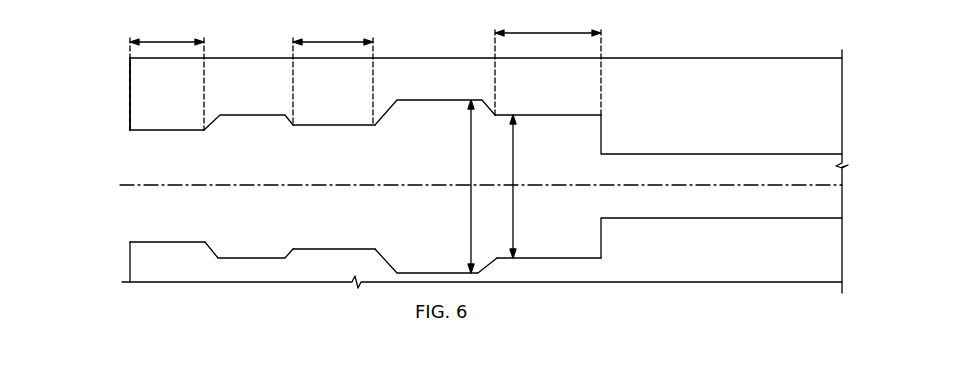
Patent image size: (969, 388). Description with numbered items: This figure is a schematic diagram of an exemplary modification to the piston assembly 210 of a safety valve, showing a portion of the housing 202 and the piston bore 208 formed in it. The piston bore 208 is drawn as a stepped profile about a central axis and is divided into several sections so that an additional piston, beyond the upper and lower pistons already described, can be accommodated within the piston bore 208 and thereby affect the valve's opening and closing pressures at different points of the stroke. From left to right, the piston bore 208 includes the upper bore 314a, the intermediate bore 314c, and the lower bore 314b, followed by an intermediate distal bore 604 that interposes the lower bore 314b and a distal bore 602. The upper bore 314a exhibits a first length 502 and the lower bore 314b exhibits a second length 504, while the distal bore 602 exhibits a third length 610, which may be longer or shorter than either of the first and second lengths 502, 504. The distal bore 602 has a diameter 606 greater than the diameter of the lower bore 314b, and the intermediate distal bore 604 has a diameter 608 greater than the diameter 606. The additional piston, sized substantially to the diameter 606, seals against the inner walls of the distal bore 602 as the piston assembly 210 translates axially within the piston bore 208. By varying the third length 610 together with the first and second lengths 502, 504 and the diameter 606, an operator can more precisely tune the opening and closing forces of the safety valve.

The housing 202 is at (718, 62).
The piston bore 208 is at (481, 172).
The piston assembly 210 is at (83, 43).
The upper bore 314a is at (172, 130).
The lower bore 314b is at (338, 125).
The intermediate bore 314c is at (257, 115).
The first length 502 is at (157, 40).
The second length 504 is at (322, 40).
The distal bore 602 is at (559, 115).
The intermediate distal bore 604 is at (430, 100).
The diameter 606 is at (514, 152).
The diameter 608 is at (470, 152).
The third length 610 is at (537, 32).